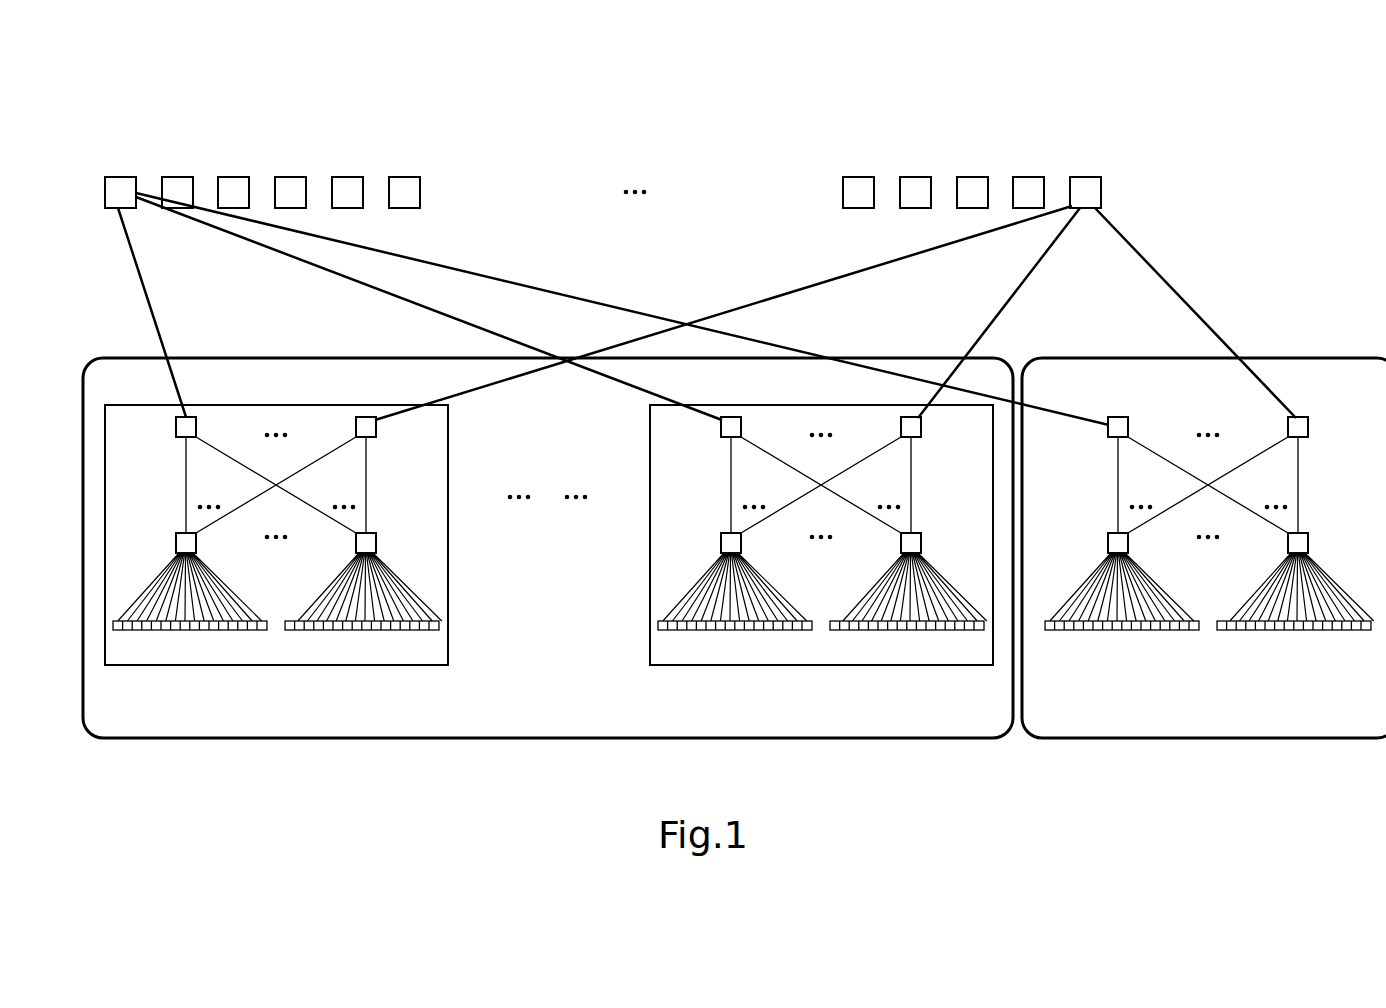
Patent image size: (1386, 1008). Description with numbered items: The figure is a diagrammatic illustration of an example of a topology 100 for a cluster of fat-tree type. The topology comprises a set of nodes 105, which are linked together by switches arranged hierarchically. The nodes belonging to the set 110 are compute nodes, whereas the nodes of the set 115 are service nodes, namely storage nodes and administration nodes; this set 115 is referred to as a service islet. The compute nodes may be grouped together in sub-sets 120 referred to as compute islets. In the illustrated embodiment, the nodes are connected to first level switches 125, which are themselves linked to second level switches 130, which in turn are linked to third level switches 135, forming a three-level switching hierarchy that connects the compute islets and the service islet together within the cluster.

The topology 100 is at (1252, 142).
The nodes 105 is at (185, 630).
The set of compute nodes 110 is at (314, 740).
The set of service nodes 115 is at (1208, 740).
The sub-set of compute nodes 120 is at (851, 667).
The first level switches 125 is at (921, 545).
The second level switches 130 is at (921, 427).
The third level switches 135 is at (1087, 177).